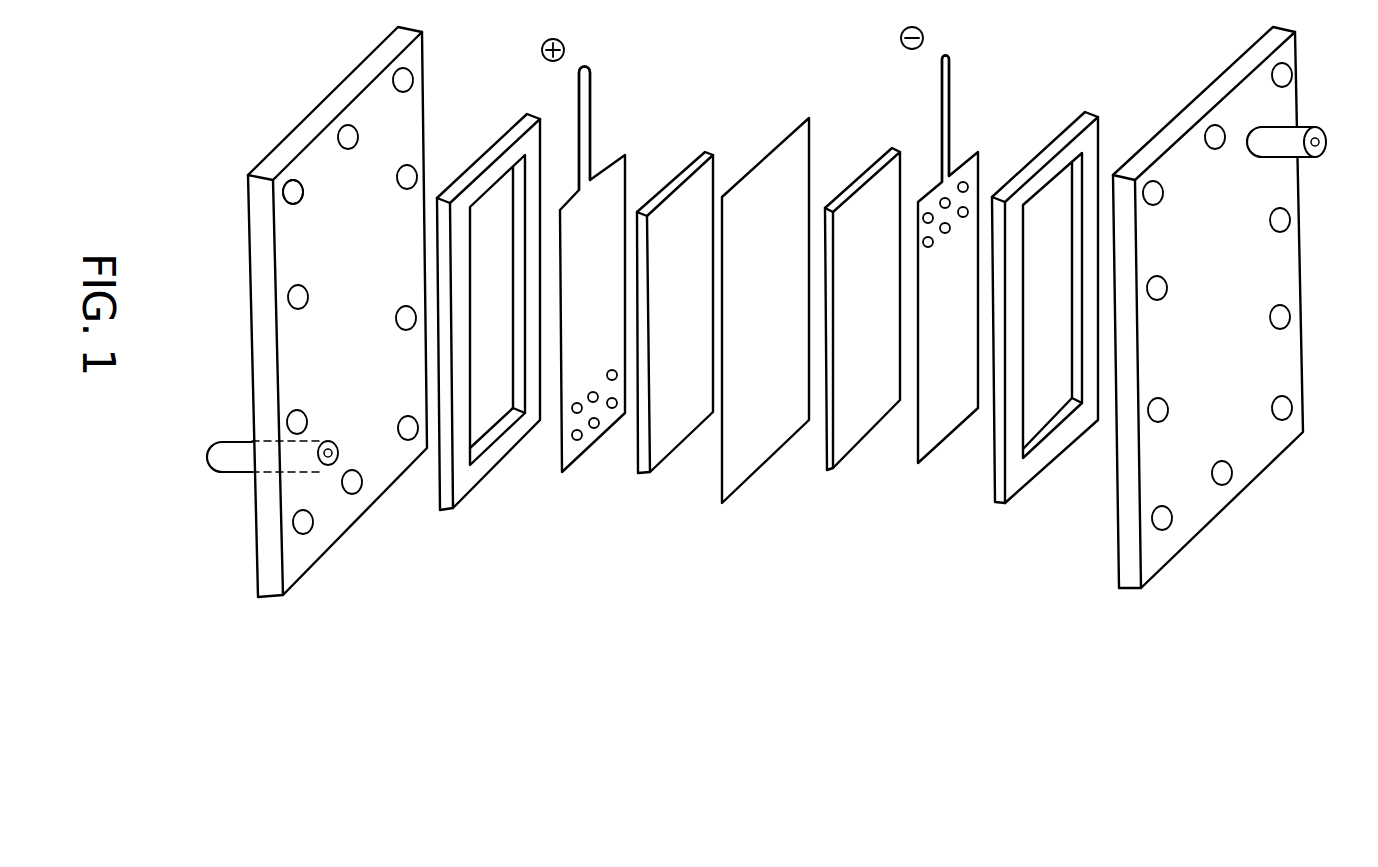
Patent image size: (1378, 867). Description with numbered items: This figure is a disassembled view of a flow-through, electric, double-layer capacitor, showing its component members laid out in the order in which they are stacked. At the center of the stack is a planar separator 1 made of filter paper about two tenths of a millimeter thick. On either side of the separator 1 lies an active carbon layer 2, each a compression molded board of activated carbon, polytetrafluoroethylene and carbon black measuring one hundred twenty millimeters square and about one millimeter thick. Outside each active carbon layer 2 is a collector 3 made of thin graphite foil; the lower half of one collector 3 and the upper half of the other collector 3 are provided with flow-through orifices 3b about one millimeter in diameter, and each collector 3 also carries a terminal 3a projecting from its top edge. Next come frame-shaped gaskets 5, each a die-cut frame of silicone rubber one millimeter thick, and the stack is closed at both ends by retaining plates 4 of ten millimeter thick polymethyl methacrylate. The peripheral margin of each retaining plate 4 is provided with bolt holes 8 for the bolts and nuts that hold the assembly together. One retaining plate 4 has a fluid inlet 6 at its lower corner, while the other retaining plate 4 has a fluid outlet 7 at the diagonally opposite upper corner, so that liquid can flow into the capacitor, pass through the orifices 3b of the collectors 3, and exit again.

The planar separator 1 is at (738, 475).
The active carbon layer 2 is at (662, 438).
The collector 3 is at (590, 437).
The terminal 3a is at (590, 107).
The flow-through orifices 3b is at (567, 440).
The retaining plate 4 is at (378, 480).
The frame-shaped gasket 5 is at (490, 463).
The fluid inlet 6 is at (212, 457).
The fluid outlet 7 is at (1330, 137).
The bolt holes 8 is at (272, 197).